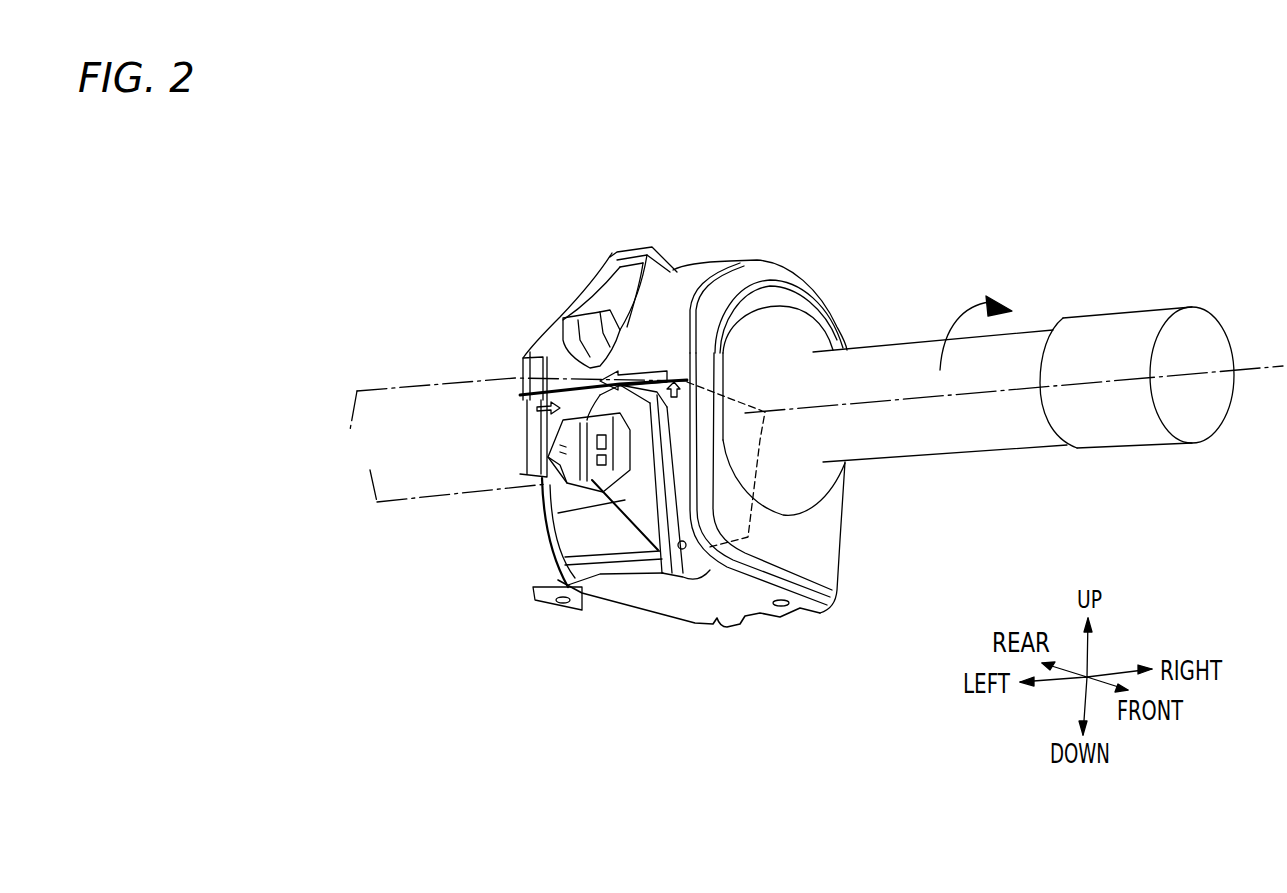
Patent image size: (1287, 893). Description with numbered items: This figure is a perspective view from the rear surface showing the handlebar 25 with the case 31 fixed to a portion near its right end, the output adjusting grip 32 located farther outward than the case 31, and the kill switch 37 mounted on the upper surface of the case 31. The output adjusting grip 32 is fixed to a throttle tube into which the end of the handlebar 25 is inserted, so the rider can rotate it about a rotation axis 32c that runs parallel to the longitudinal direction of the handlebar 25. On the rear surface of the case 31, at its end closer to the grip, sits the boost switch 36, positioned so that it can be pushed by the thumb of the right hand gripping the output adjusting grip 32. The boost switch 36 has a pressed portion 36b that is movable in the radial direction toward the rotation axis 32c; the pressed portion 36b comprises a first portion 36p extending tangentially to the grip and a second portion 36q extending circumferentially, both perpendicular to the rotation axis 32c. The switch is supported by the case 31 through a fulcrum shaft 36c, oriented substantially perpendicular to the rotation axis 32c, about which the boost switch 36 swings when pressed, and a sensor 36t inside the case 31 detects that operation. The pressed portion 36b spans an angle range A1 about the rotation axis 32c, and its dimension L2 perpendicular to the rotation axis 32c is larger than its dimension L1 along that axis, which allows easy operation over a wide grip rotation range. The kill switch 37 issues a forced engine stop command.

The handlebar 25 is at (425, 390).
The case 31 is at (692, 279).
The output adjusting grip 32 is at (907, 356).
The rotation axis 32c is at (1212, 368).
The boost switch 36 is at (563, 399).
The pressed portion 36b is at (352, 446).
The first portion 36p is at (563, 422).
The second portion 36q is at (565, 512).
The sensor 36t is at (520, 465).
The fulcrum shaft 36c is at (548, 513).
The kill switch 37 is at (600, 293).
The dimension in a direction along the rotation axis L1 is at (633, 367).
The dimension in the direction perpendicular to the rotation axis L2 is at (656, 482).
The angle range A1 is at (776, 551).